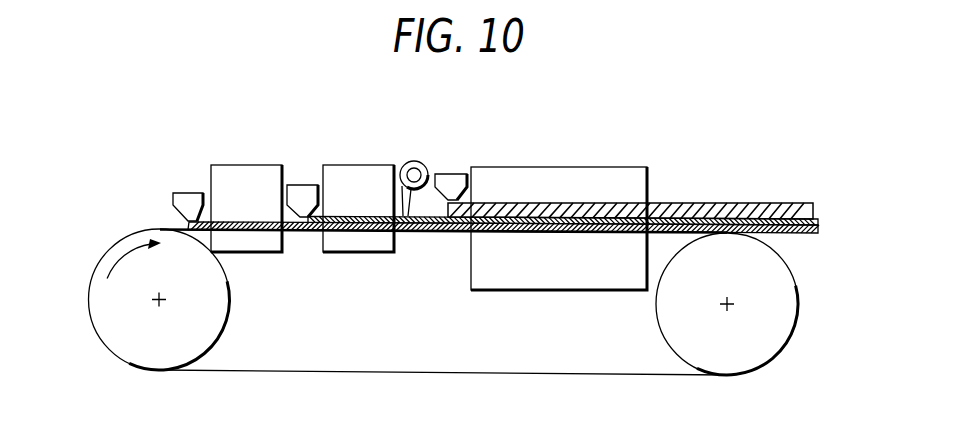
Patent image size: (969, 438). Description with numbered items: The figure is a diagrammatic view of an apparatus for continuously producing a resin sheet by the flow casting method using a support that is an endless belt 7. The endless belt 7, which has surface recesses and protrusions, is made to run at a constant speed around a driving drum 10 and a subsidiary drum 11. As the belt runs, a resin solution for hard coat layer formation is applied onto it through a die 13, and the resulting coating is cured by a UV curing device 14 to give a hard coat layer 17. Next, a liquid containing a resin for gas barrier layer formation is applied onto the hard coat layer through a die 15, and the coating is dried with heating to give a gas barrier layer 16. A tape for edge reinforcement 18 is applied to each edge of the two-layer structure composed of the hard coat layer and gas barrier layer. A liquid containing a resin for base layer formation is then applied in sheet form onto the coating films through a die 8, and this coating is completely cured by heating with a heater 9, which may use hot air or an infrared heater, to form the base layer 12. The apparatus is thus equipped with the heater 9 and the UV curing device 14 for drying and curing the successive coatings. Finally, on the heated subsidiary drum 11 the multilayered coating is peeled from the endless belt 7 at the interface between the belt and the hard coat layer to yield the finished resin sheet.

The endless belt 7 is at (443, 371).
The die for base layer formation 8 is at (450, 173).
The heater 9 is at (360, 165).
The driving drum 10 is at (88, 300).
The subsidiary drum 11 is at (798, 303).
The base layer 12 is at (727, 203).
The die for hard coat layer formation 13 is at (190, 192).
The UV curing device 14 is at (247, 165).
The die for gas barrier layer formation 15 is at (292, 185).
The gas barrier layer 16 is at (818, 220).
The hard coat layer 17 is at (818, 232).
The tape for edge reinforcement 18 is at (415, 161).